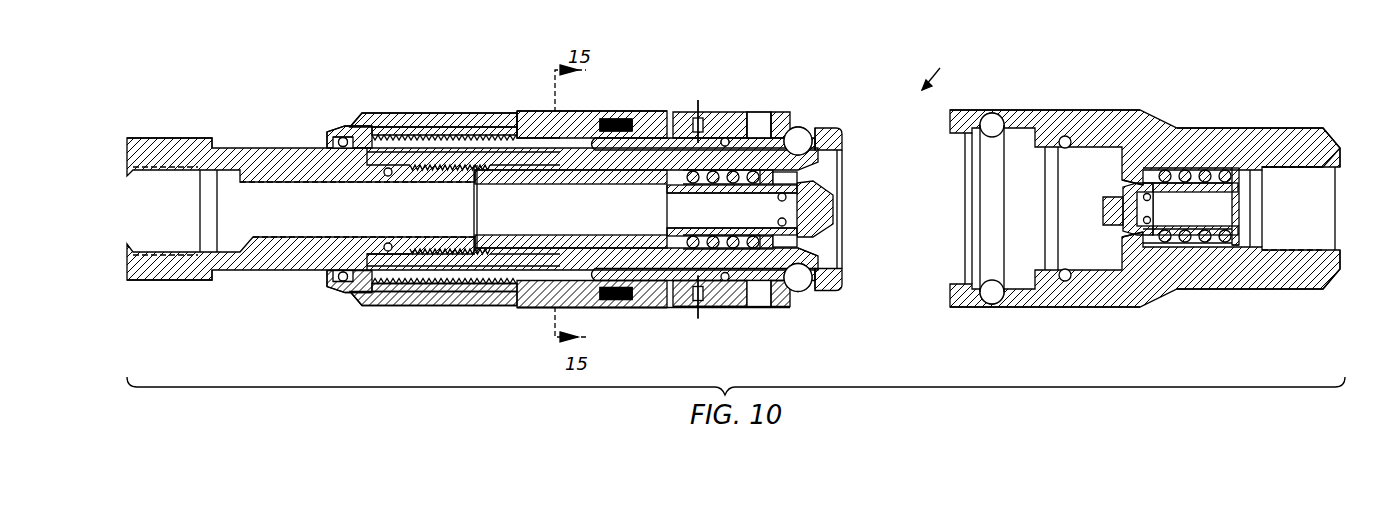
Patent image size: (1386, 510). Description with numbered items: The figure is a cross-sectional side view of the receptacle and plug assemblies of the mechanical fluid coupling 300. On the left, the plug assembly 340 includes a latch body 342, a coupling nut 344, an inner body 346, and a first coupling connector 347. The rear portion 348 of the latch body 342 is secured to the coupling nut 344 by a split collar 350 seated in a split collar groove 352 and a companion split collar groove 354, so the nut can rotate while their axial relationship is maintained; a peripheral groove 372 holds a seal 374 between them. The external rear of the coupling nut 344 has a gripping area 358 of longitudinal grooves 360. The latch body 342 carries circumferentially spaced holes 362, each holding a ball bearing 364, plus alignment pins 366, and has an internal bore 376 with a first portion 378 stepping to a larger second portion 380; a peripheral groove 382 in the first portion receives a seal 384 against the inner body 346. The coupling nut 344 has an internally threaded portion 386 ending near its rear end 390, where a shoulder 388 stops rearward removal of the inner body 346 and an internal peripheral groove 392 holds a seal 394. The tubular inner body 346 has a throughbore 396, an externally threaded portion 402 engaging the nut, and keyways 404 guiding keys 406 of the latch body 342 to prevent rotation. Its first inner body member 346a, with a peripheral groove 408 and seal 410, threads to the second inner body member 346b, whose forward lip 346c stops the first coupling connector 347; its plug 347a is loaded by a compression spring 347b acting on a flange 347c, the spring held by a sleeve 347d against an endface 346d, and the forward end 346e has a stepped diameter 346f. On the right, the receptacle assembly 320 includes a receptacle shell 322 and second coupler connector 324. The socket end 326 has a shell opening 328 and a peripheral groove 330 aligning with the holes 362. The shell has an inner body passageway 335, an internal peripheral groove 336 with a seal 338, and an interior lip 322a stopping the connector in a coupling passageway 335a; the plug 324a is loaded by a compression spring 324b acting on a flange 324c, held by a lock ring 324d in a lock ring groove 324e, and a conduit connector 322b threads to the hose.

The coupling 300 is at (935, 69).
The receptacle assembly 320 is at (1128, 105).
The receptacle shell 322 is at (1175, 123).
The interior lip 322a is at (1122, 181).
The conduit connector 322b is at (1282, 248).
The second coupler connector 324 is at (1240, 188).
The plug 324a is at (1122, 226).
The compression spring 324b is at (1195, 248).
The flange 324c is at (1155, 248).
The lock ring 324d is at (1236, 168).
The lock ring groove 324e is at (1235, 247).
The socket end 326 is at (1013, 110).
The shell opening 328 is at (965, 132).
The peripheral groove 330 is at (993, 304).
The inner body passageway 335 is at (1100, 268).
The coupling passageway 335a is at (1268, 157).
The internal peripheral groove 336 is at (1066, 281).
The seal 338 is at (1067, 136).
The plug assembly 340 is at (510, 111).
The latch body 342 is at (710, 309).
The coupling nut 344 is at (535, 117).
The inner body 346 is at (463, 157).
The first inner body member 346a is at (226, 157).
The second inner body member 346b is at (492, 292).
The forward lip 346c is at (820, 165).
The endface 346d is at (478, 247).
The forward end 346e is at (815, 260).
The stepped diameter 346f is at (818, 138).
The first coupling connector 347 is at (823, 240).
The plug 347a is at (825, 200).
The compression spring 347b is at (700, 230).
The flange 347c is at (778, 248).
The sleeve 347d is at (540, 184).
The rear portion 348 is at (740, 309).
The split collar 350 is at (615, 120).
The split collar groove 352 is at (615, 308).
The companion split collar groove 354 is at (630, 308).
The gripping area 358 is at (420, 112).
The longitudinal grooves 360 is at (373, 124).
The circumferentially spaced holes 362 is at (802, 292).
The ball bearing 364 is at (798, 136).
The alignment pins 366 is at (762, 112).
The peripheral groove 372 is at (690, 308).
The seal 374 is at (660, 111).
The internal bore 376 is at (843, 147).
The first portion 378 is at (822, 266).
The second portion 380 is at (637, 118).
The peripheral groove 382 is at (712, 308).
The seal 384 is at (728, 138).
The internally threaded portion 386 is at (425, 293).
The shoulder 388 is at (347, 140).
The rear end 390 is at (392, 292).
The internal peripheral groove 392 is at (333, 290).
The seal 394 is at (327, 140).
The throughbore 396 is at (283, 182).
The externally threaded portion 402 is at (362, 293).
The keyway 404 is at (445, 270).
The key 406 is at (523, 300).
The peripheral groove 408 is at (390, 176).
The seal 410 is at (388, 243).